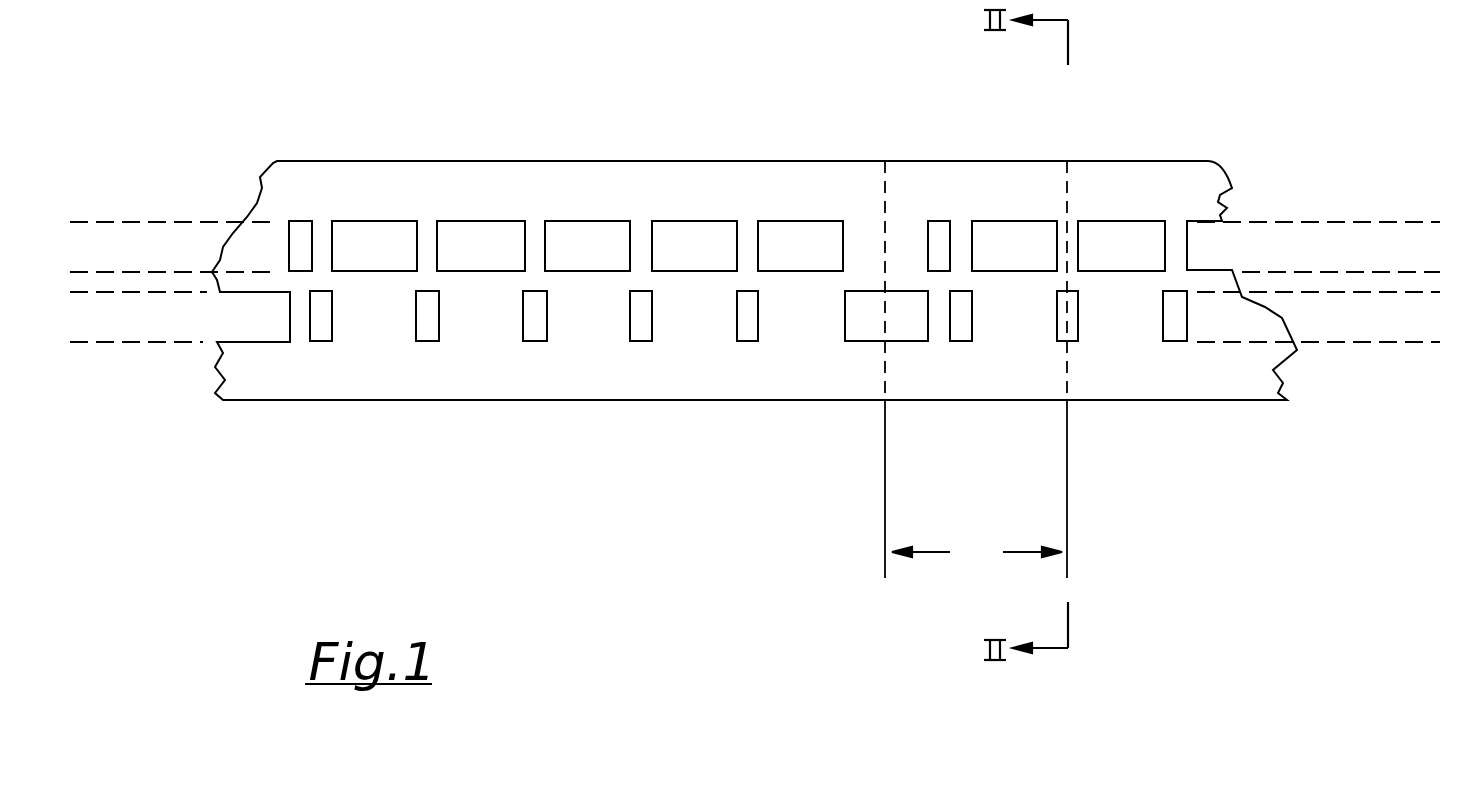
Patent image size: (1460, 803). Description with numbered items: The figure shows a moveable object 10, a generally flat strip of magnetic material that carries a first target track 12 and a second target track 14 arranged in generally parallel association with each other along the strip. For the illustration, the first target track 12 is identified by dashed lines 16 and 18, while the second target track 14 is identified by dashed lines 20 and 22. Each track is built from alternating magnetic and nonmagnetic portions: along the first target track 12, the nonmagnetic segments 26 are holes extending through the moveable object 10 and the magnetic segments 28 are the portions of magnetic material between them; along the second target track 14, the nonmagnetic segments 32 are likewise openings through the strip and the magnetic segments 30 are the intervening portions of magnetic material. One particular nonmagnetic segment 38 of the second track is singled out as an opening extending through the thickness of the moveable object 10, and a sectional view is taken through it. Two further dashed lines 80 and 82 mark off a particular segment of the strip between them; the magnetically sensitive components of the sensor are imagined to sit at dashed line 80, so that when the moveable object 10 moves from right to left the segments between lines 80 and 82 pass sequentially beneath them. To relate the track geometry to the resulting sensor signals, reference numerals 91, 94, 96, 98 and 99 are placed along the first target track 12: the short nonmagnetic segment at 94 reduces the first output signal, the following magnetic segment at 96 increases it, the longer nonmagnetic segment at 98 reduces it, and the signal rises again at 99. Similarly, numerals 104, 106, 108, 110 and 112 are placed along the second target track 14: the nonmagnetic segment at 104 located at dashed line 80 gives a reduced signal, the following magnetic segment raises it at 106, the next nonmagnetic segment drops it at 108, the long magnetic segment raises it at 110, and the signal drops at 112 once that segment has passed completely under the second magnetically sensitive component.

The moveable object 10 is at (303, 183).
The first target track 12 is at (118, 222).
The second target track 14 is at (133, 343).
The dashed line 16 is at (1317, 270).
The dashed line 18 is at (1282, 218).
The dashed line 20 is at (1323, 340).
The dashed line 22 is at (1328, 290).
The nonmagnetic segments 26 is at (462, 226).
The magnetic segments 28 is at (535, 232).
The magnetic segments 30 is at (378, 315).
The nonmagnetic segments 32 is at (432, 330).
The nonmagnetic segment 38 is at (1078, 312).
The dashed line 80 is at (885, 185).
The dashed line 82 is at (1070, 185).
The reference position 91 is at (900, 230).
The short nonmagnetic segment position 94 is at (938, 265).
The magnetic segment position 96 is at (960, 227).
The longer nonmagnetic segment position 98 is at (1042, 227).
The signal rise position 99 is at (1063, 225).
The nonmagnetic segment position 104 is at (910, 325).
The magnetic segment position 106 is at (942, 337).
The nonmagnetic segment position 108 is at (962, 332).
The long magnetic segment position 110 is at (1025, 313).
The signal drop position 112 is at (1078, 332).